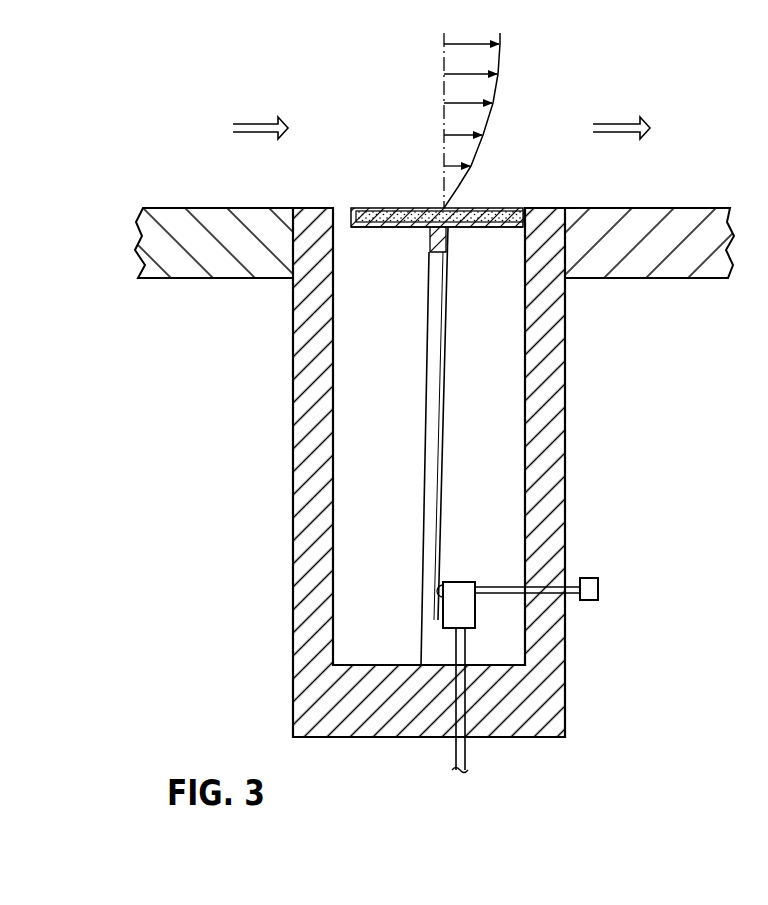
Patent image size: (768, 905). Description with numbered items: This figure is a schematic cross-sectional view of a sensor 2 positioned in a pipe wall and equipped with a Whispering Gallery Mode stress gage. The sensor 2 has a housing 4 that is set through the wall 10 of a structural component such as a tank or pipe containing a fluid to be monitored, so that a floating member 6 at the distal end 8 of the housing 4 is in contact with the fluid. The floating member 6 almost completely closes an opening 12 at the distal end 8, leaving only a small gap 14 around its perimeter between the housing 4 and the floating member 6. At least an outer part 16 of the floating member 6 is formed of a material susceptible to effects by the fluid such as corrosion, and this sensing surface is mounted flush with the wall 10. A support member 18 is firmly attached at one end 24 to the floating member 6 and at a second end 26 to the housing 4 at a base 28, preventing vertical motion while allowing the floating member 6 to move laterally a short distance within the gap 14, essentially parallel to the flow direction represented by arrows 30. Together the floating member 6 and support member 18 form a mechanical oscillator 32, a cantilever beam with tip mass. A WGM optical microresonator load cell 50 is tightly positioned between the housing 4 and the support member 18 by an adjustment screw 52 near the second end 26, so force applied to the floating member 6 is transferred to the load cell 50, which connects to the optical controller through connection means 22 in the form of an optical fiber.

The sensor 2 is at (246, 626).
The housing 4 is at (293, 449).
The floating member 6 is at (378, 228).
The distal end 8 is at (312, 210).
The wall 10 is at (197, 208).
The opening 12 is at (344, 234).
The gap 14 is at (343, 206).
The outer part 16 is at (397, 208).
The support member 18 is at (422, 478).
The connection means 22 is at (456, 760).
The one end 24 is at (450, 230).
The second end 26 is at (423, 658).
The base 28 is at (558, 692).
The arrows 30 is at (444, 98).
The mechanical oscillator 32 is at (487, 196).
The WGM optical microresonator load cell 50 is at (462, 586).
The adjustment screw 52 is at (546, 590).